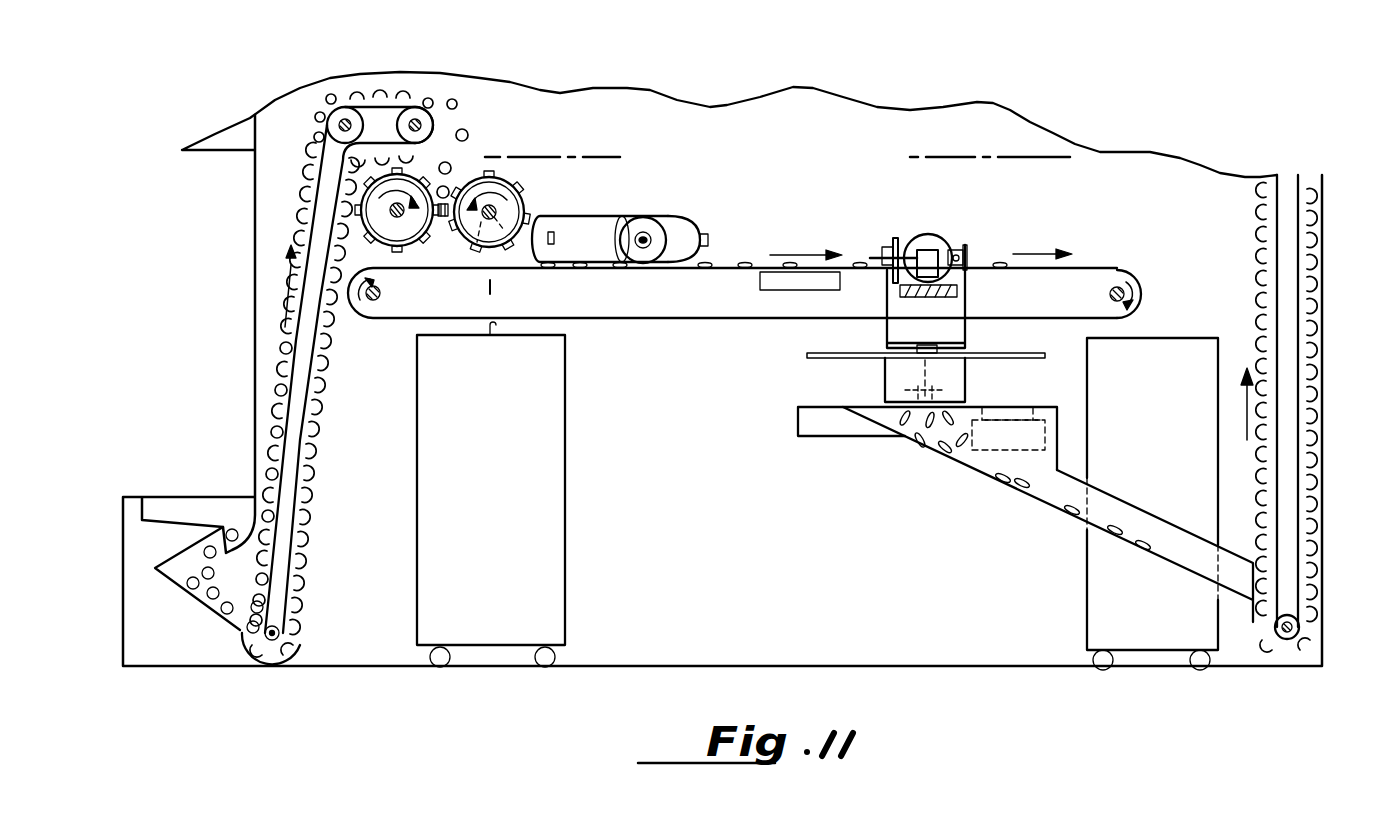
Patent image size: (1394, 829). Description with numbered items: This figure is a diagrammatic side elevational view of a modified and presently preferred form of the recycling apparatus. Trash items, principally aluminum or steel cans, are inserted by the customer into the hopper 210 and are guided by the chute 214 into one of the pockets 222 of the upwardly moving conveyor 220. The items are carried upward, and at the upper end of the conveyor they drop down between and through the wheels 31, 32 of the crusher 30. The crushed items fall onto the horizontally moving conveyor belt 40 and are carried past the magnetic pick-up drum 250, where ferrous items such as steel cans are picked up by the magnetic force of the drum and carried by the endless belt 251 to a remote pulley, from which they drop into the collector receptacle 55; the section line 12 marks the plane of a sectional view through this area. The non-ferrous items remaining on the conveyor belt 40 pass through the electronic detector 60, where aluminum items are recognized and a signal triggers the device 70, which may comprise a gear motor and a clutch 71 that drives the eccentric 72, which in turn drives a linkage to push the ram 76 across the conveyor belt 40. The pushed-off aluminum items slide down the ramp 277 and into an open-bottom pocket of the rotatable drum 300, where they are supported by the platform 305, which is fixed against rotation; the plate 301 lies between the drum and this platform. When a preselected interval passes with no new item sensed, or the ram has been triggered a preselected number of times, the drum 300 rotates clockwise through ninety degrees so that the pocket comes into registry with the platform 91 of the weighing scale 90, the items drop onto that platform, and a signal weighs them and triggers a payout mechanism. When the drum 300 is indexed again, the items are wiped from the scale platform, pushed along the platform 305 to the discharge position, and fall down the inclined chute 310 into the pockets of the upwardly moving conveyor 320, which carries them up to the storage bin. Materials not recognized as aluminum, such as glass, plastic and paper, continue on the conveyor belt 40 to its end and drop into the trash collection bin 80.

The section line 12- 12 is at (505, 145).
The crusher 30 is at (463, 158).
The crusher wheel 31 is at (380, 246).
The crusher wheel 32 is at (520, 202).
The endless belt 251 is at (592, 214).
The magnetic pick-up drum 250 is at (682, 215).
The electronic detector 60 is at (797, 240).
The ram 76 is at (893, 243).
The device 70 is at (947, 227).
The clutch 71 is at (935, 255).
The eccentric 72 is at (893, 274).
The ramp 277 is at (950, 311).
The conveyor belt 40 is at (1100, 265).
The rotatable drum 300 is at (808, 343).
The gate plate 301 is at (1013, 354).
The platform 305 is at (800, 409).
The scale platform 91 is at (1020, 407).
The weighing scale 90 is at (1000, 437).
The inclined chute 310 is at (1057, 508).
The trash collection bin 80 is at (1095, 590).
The upwardly moving conveyor 320 is at (1305, 550).
The upwardly moving conveyor 220 is at (323, 430).
The pockets 222 is at (310, 490).
The hopper 210 is at (206, 495).
The chute 214 is at (190, 548).
The collector receptacle 55 is at (560, 525).